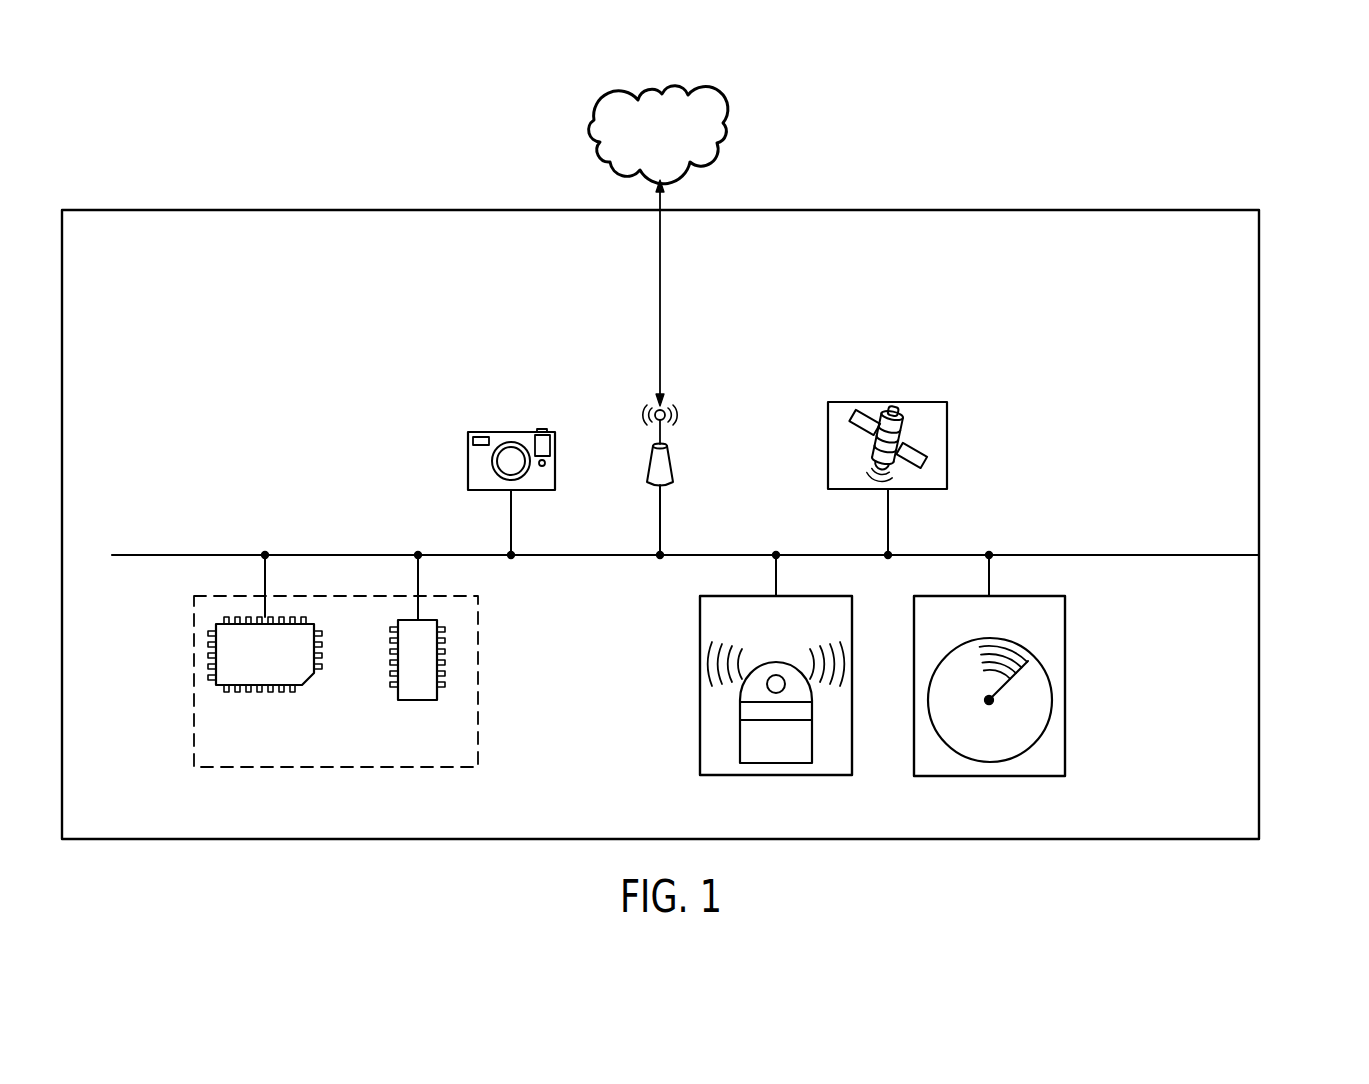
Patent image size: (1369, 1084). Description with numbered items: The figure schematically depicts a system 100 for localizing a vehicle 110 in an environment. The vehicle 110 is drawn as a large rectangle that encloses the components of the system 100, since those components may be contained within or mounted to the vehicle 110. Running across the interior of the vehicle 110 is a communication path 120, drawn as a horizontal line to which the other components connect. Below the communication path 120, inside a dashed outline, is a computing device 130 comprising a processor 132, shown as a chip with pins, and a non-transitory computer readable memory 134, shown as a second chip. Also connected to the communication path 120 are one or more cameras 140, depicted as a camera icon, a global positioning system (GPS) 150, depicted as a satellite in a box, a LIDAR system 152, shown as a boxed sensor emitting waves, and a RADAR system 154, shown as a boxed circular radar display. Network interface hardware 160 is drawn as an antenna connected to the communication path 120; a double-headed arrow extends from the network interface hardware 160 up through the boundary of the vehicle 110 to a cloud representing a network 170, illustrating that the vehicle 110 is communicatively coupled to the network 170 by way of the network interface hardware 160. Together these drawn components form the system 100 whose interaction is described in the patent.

The system 100 is at (1299, 132).
The vehicle 110 is at (1259, 331).
The communication path 120 is at (246, 553).
The computing device 130 is at (478, 748).
The processor 132 is at (304, 686).
The non-transitory computer readable memory 134 is at (418, 701).
The camera 140 is at (512, 431).
The global positioning system (GPS) 150 is at (888, 401).
The LIDAR system 152 is at (700, 617).
The RADAR system 154 is at (1065, 617).
The network interface hardware 160 is at (668, 468).
The network 170 is at (590, 130).